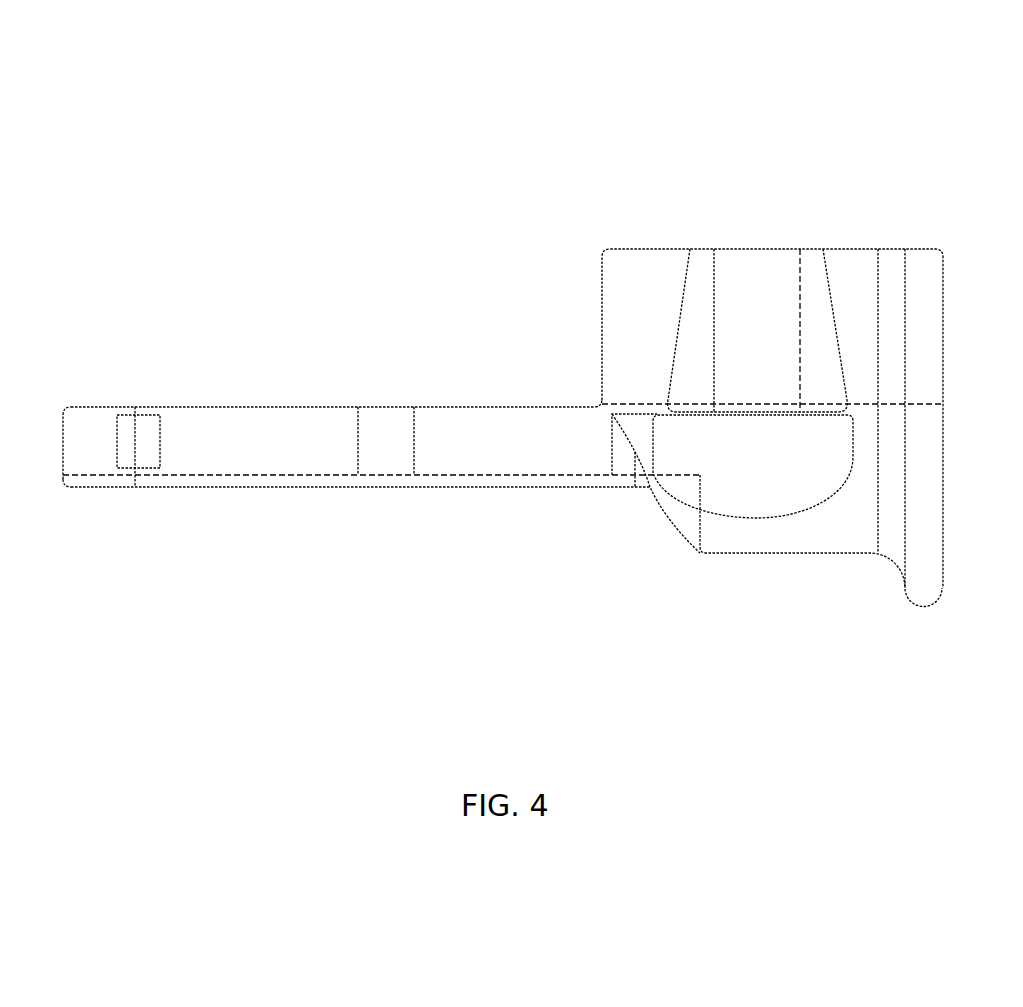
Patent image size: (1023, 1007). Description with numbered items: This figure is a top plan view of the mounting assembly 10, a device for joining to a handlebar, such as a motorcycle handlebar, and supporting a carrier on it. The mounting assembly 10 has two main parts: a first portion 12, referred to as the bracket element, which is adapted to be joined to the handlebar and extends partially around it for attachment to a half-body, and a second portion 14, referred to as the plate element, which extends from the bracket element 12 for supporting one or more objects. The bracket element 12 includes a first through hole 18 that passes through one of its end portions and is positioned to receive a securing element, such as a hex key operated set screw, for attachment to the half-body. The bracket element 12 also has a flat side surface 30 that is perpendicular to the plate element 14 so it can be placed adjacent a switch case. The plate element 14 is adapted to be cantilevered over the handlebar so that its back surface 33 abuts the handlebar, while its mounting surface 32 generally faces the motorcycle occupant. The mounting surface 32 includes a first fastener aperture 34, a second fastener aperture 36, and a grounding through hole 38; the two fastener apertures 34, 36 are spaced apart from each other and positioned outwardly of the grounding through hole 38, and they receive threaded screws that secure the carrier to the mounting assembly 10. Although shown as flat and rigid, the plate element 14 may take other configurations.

The mounting assembly 10 is at (339, 112).
The first portion 12 is at (942, 173).
The second portion 14 is at (62, 598).
The first through hole 18 is at (800, 292).
The flat side surface 30 is at (943, 325).
The mounting surface 32 is at (216, 487).
The back surface 33 is at (264, 407).
The first fastener aperture 34 is at (117, 435).
The second fastener aperture 36 is at (613, 428).
The grounding through hole 38 is at (410, 437).